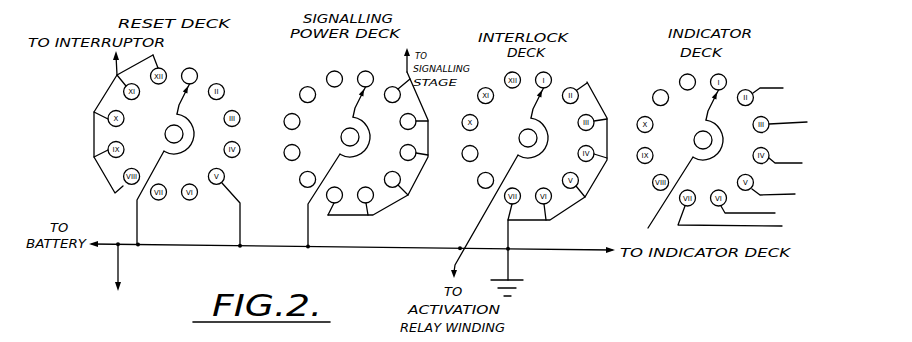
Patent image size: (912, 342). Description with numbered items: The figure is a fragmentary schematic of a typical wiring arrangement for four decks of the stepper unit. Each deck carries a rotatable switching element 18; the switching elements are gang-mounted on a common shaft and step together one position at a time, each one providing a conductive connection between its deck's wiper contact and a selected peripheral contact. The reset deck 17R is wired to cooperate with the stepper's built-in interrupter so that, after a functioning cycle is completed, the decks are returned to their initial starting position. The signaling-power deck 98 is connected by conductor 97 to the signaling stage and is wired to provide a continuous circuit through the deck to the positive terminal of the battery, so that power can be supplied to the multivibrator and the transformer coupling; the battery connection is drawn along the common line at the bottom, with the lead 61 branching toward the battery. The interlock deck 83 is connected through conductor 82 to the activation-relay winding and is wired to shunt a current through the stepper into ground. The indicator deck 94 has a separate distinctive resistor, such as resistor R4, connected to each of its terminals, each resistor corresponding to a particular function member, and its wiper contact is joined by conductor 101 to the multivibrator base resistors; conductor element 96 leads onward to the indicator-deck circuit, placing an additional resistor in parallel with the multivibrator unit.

The reset deck 17R is at (198, 63).
The signaling-power deck 98 is at (303, 69).
The conductor 97 is at (405, 71).
The interlock deck 83 is at (583, 68).
The indicator deck 94 is at (760, 70).
The resistor R4 is at (299, 93).
The switching element 18 is at (179, 106).
The conductor 82 is at (482, 217).
The conductor 101 is at (656, 216).
The battery lead 61 is at (122, 259).
The conductor element 96 is at (572, 250).